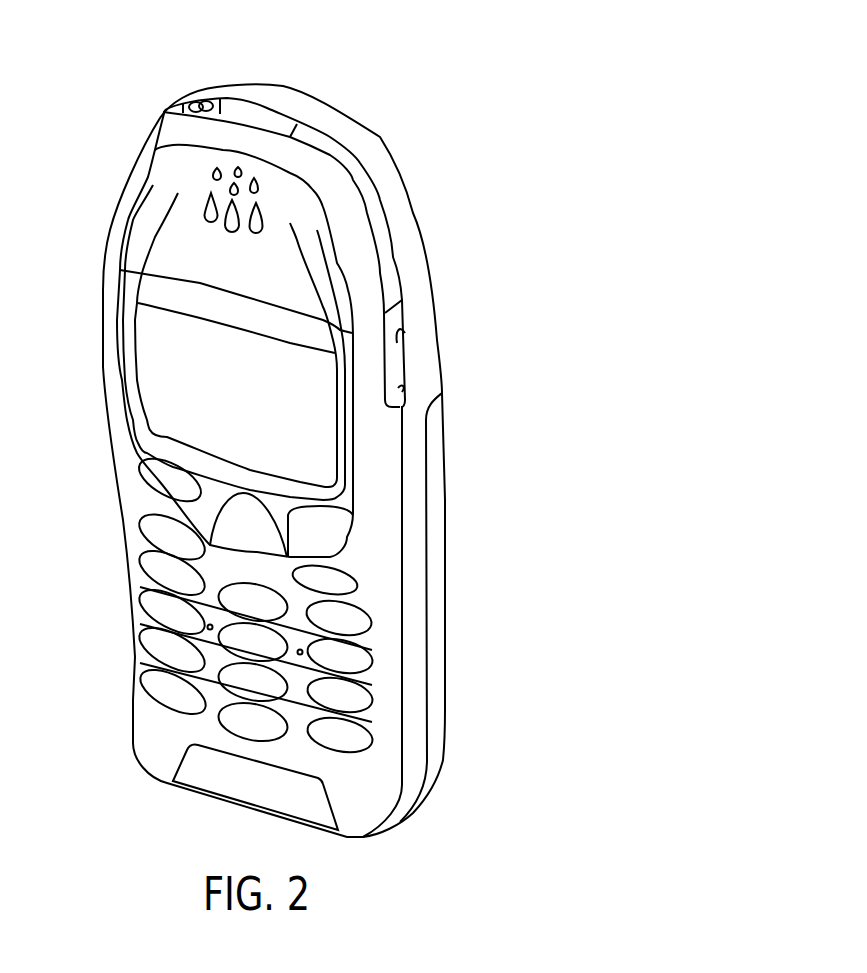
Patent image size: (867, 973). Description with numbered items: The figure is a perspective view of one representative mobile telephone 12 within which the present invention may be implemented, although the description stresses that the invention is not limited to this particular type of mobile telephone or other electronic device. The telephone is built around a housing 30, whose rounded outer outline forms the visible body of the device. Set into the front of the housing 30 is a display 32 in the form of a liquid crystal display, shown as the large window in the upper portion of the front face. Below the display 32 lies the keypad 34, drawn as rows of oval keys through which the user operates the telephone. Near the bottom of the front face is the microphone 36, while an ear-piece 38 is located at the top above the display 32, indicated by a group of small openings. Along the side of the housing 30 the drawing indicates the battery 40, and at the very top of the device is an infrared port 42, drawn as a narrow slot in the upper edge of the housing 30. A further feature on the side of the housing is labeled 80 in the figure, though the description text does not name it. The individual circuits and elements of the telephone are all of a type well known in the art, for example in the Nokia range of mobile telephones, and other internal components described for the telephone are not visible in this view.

The mobile telephone 12 is at (384, 86).
The housing 30 is at (412, 233).
The display 32 is at (315, 432).
The keypad 34 is at (337, 742).
The microphone 36 is at (200, 777).
The ear-piece 38 is at (223, 193).
The battery 40 is at (435, 723).
The infrared port 42 is at (257, 113).
The side panel 80 is at (445, 593).